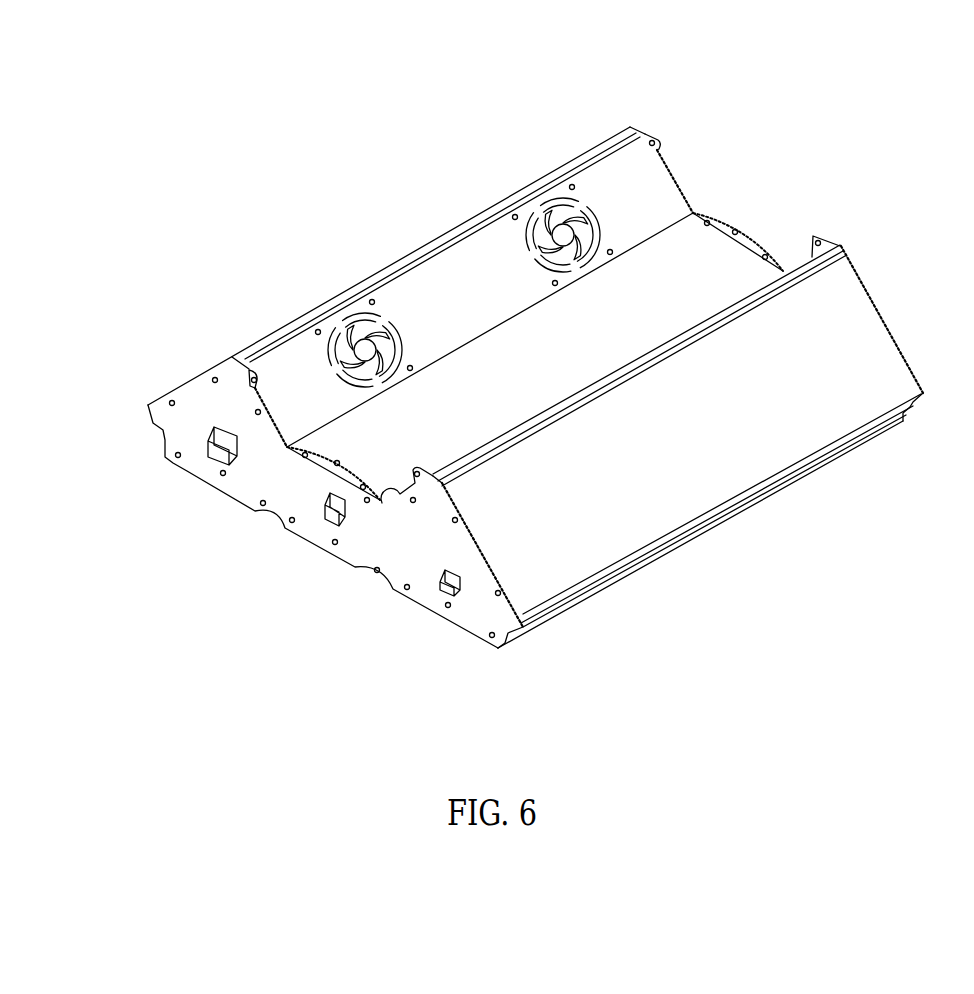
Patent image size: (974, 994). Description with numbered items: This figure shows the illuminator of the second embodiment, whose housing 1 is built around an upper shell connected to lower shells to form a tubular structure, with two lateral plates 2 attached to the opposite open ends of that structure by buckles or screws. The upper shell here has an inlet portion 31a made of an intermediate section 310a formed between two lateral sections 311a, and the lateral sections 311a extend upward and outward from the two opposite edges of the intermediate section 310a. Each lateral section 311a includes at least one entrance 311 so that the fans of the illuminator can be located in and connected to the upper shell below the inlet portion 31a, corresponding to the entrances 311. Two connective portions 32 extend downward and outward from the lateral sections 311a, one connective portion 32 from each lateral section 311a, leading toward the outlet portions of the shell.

The housing 1 is at (740, 532).
The lateral plates 2 is at (250, 482).
The inlet portion 31a is at (927, 143).
The intermediate section 310a is at (712, 260).
The lateral sections 311a is at (660, 192).
The entrances 311 is at (377, 322).
The connective portions 32 is at (187, 385).